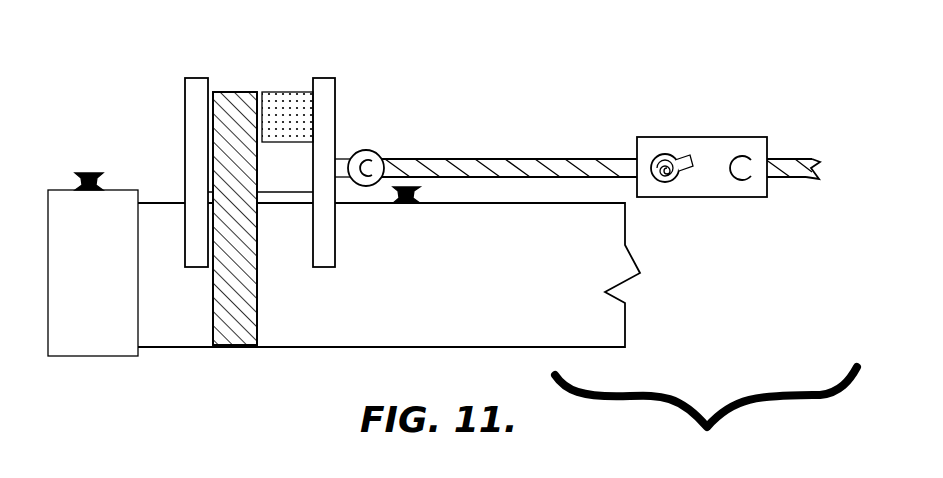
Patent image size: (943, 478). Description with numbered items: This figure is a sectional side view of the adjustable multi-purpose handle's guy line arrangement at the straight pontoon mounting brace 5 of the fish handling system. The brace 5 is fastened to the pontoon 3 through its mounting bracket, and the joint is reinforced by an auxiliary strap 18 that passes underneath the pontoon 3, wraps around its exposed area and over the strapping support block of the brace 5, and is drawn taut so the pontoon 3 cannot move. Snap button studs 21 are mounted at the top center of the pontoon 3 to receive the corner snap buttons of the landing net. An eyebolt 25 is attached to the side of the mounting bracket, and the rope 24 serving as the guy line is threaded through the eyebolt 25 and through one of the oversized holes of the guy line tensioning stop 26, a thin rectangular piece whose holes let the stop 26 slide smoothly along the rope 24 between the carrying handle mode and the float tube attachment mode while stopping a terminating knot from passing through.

The pontoon 3 is at (632, 318).
The straight pontoon mounting brace 5 is at (234, 216).
The auxiliary strap 18 is at (239, 350).
The snap button stud 21 is at (105, 165).
The rope 24 is at (505, 152).
The eyebolt 25 is at (367, 143).
The guy line tensioning stop 26 is at (722, 130).